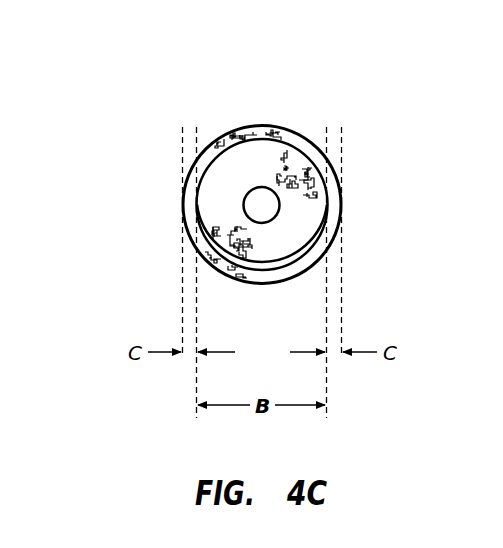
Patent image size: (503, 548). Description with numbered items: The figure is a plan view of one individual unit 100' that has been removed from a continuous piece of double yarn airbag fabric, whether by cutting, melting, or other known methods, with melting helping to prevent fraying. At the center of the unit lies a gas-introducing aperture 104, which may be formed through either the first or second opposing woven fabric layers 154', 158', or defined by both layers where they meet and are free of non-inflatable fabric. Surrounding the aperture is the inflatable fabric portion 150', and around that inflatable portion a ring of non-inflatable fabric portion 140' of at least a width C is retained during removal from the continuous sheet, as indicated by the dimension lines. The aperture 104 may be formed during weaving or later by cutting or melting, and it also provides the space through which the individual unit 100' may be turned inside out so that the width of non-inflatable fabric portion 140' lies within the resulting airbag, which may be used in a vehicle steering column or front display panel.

The individual unit of airbag fabric 100' is at (323, 160).
The gas-introducing aperture 104 is at (263, 186).
The inflatable fabric portion 150' is at (317, 204).
The first opposing woven fabric layer 154' is at (340, 205).
The second opposing woven fabric layer 158' is at (262, 205).
The non-inflatable fabric portion 140' is at (262, 268).